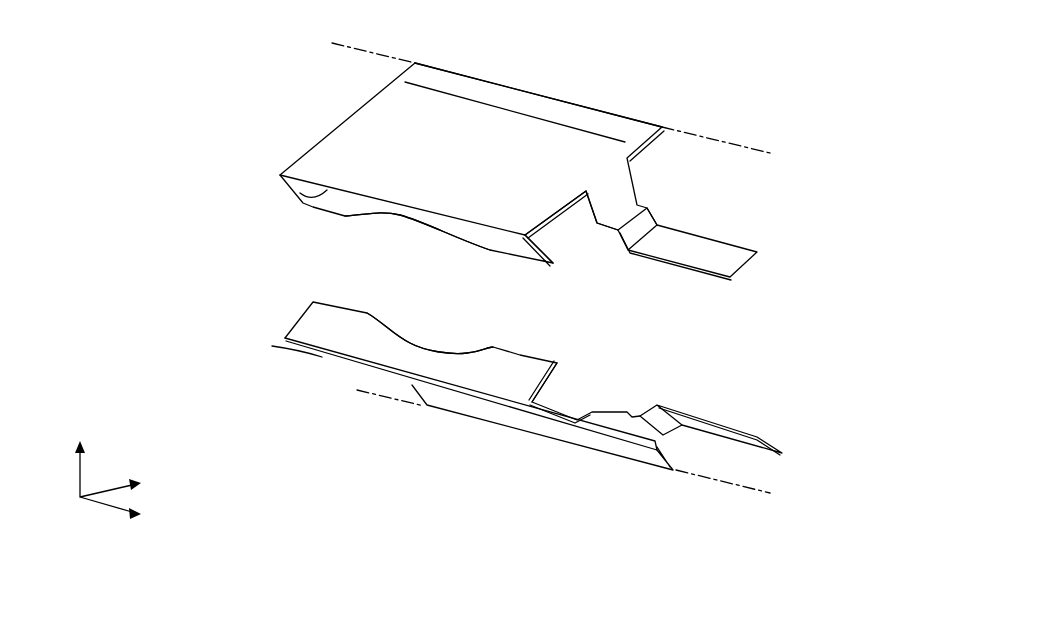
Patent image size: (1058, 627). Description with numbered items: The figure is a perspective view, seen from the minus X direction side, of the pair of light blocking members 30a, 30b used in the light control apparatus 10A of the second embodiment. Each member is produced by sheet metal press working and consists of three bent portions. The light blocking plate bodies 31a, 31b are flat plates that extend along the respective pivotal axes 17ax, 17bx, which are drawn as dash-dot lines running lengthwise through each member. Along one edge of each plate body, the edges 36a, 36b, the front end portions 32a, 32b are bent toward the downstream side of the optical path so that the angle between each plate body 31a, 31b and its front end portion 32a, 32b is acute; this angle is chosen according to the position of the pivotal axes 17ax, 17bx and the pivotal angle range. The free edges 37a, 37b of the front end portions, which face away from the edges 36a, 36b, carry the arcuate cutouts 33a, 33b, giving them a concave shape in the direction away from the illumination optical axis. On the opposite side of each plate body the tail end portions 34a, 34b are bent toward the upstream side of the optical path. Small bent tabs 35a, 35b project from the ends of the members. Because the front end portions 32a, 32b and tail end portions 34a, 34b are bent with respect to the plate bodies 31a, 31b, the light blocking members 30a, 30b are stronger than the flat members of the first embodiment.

The light control apparatus 10A is at (712, 62).
The light blocking member 30b is at (236, 140).
The light blocking plate body 31b is at (362, 128).
The front end portion 32b is at (332, 203).
The arcuate cutout 33b is at (450, 230).
The tail end portion 34b is at (512, 90).
The tab portion 35b is at (648, 208).
The edge of light blocking plate body 36b is at (296, 191).
The edge of front end portion 37b is at (545, 266).
The pivotal axis 17bx is at (697, 132).
The light blocking member 30a is at (276, 384).
The light blocking plate body 31a is at (362, 372).
The front end portion 32a is at (313, 302).
The arcuate cutout 33a is at (400, 342).
The tail end portion 34a is at (477, 410).
The tab portion 35a is at (655, 405).
The edge of light blocking plate body 36a is at (285, 352).
The edge of front end portion 37a is at (545, 353).
The pivotal axis 17ax is at (723, 482).